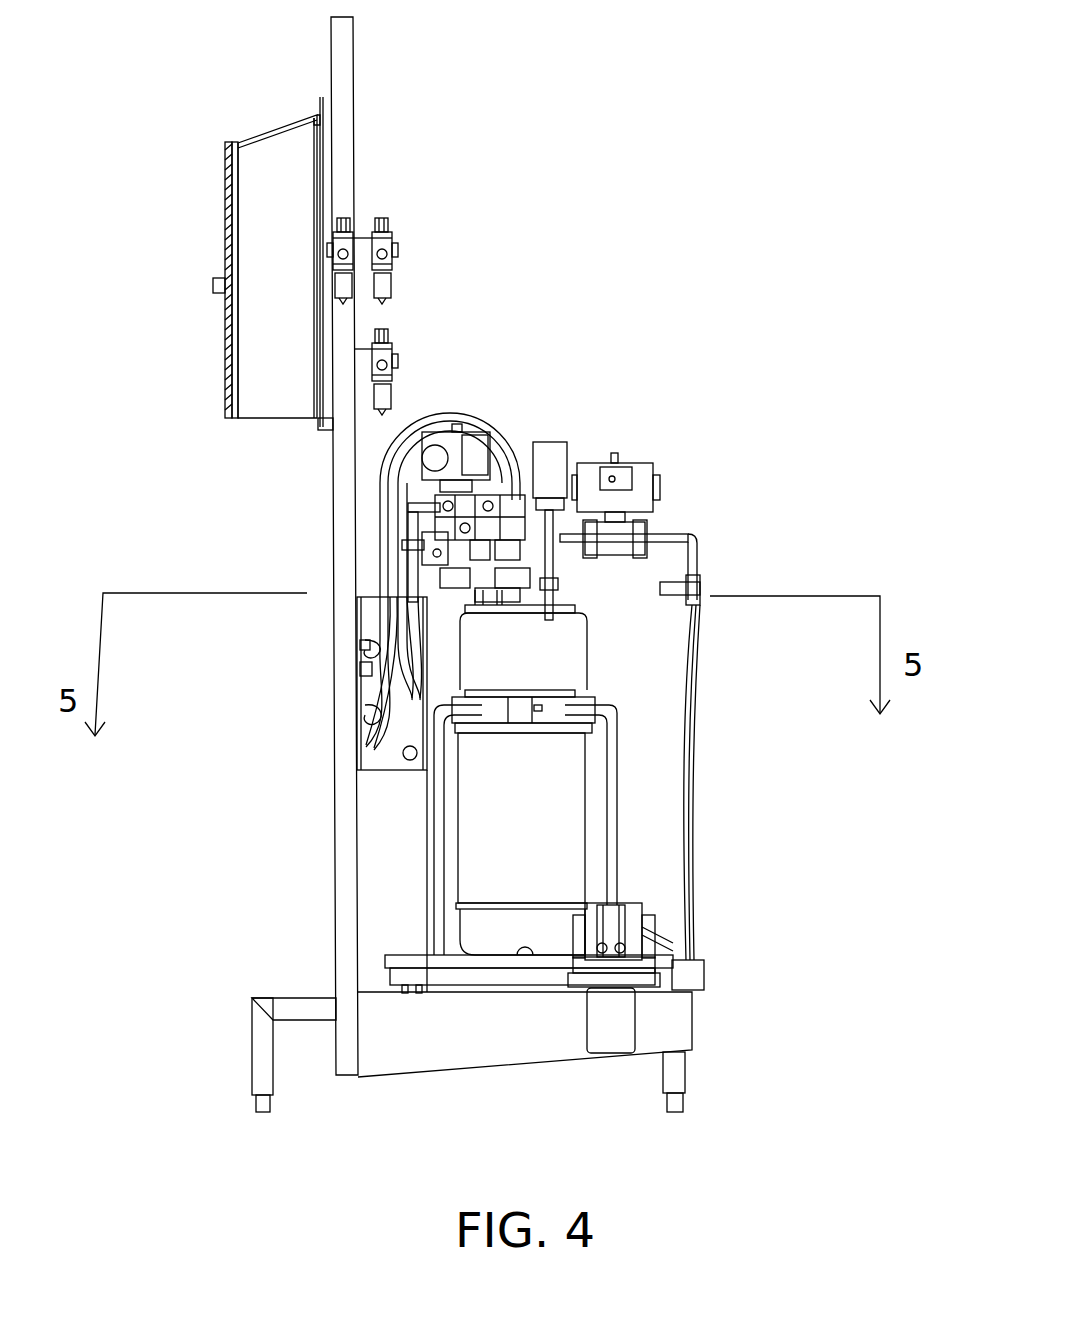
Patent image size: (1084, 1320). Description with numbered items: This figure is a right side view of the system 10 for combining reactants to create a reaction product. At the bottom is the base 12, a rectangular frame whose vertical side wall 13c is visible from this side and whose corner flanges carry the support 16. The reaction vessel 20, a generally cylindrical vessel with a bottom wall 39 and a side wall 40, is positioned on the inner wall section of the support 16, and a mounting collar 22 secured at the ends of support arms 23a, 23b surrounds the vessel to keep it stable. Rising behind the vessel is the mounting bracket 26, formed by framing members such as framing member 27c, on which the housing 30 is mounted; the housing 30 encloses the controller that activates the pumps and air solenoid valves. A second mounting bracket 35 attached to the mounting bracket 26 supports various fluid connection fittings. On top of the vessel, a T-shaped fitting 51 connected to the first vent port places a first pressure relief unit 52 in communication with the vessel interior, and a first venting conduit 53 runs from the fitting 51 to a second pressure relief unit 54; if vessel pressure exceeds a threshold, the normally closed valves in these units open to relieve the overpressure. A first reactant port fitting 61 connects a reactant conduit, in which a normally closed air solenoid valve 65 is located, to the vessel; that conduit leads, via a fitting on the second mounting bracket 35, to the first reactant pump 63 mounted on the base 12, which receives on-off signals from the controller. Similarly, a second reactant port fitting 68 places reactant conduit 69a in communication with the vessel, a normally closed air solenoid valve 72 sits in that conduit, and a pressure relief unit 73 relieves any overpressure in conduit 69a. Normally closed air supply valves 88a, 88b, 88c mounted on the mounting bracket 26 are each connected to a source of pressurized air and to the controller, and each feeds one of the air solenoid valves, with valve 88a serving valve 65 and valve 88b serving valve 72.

The system 10 is at (872, 938).
The base 12 is at (477, 1052).
The vertical side wall 13c is at (420, 1042).
The support 16 is at (413, 960).
The reaction vessel 20 is at (528, 838).
The mounting collar 22 is at (590, 700).
The support arm 23a is at (425, 820).
The support arm 23b is at (616, 800).
The mounting bracket 26 is at (358, 62).
The framing member 27c is at (348, 128).
The housing 30 is at (277, 152).
The second mounting bracket 35 is at (375, 600).
The bottom wall 39 is at (445, 953).
The side wall 40 is at (586, 760).
The T-shaped fitting 51 is at (575, 565).
The first pressure relief unit 52 is at (547, 452).
The first venting conduit 53 is at (695, 562).
The second pressure relief unit 54 is at (640, 464).
The first reactant port fitting 61 is at (463, 613).
The first reactant pump 63 is at (640, 913).
The air solenoid valve 65 is at (464, 636).
The second reactant port fitting 68 is at (502, 603).
The reactant conduit 69a is at (405, 438).
The air solenoid valve 72 is at (472, 500).
The pressure relief unit 73 is at (477, 447).
The air supply valve 88a is at (349, 228).
The air supply valve 88b is at (397, 366).
The air supply valve 88c is at (387, 288).